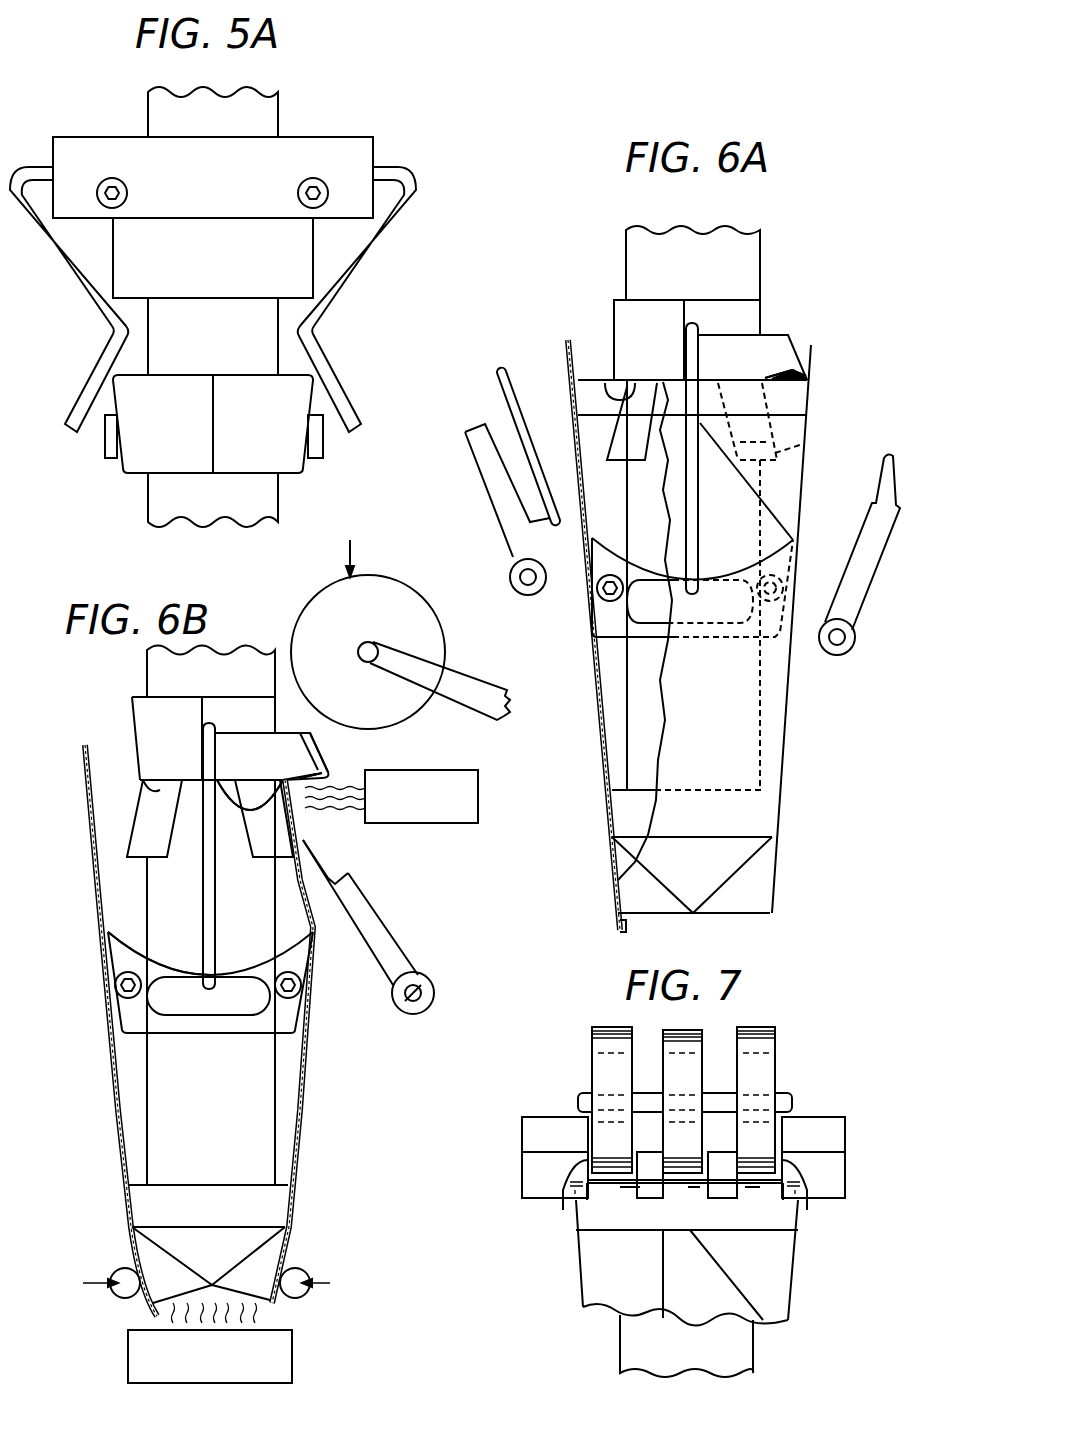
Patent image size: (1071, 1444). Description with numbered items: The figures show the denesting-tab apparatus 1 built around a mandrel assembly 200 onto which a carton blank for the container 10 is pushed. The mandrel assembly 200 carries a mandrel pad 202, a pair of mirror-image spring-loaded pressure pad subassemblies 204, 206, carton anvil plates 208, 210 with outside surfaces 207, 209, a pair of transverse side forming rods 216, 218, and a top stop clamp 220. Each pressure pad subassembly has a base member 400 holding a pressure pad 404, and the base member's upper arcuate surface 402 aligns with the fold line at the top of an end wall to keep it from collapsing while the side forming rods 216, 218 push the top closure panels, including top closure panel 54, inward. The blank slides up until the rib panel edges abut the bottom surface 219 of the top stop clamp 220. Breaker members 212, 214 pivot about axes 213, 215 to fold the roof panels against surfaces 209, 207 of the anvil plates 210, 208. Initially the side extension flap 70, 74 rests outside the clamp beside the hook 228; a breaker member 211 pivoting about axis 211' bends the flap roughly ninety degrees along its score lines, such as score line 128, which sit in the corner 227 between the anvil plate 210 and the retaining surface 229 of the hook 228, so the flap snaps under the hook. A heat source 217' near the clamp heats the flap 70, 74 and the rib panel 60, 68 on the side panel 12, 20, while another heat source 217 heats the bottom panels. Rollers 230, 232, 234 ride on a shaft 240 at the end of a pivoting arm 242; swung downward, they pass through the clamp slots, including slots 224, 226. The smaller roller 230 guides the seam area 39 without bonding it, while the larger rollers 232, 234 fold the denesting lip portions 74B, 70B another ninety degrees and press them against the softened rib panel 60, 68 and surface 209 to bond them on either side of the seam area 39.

In FIG. 6A, the tube holder 1 is at (785, 715).
In FIG. 6A, the container 10 is at (605, 763).
In FIG. 6B, the container 10 is at (335, 1175).
In FIG. 7, the side panel 12 is at (710, 1290).
In FIG. 7, the side panel 20 is at (645, 1290).
In FIG. 7, the seam area 39 is at (688, 1190).
In FIG. 6A, the top closure panel 54 is at (738, 565).
In FIG. 6A, the rib panel 60 is at (808, 399).
In FIG. 6B, the rib panel 60 is at (287, 780).
In FIG. 6A, the rib panel 68 is at (808, 399).
In FIG. 6B, the rib panel 68 is at (287, 780).
In FIG. 6A, the side extension flap 70 is at (807, 370).
In FIG. 6B, the side extension flap 70 is at (307, 778).
In FIG. 6A, the side extension flap 74 is at (807, 370).
In FIG. 6B, the side extension flap 74 is at (307, 778).
In FIG. 7, the denesting lip portion 70B is at (760, 1188).
In FIG. 7, the denesting lip portion 74B is at (615, 1187).
In FIG. 6B, the score line 128 is at (248, 905).
In FIG. 5A, the mandrel assembly 200 is at (260, 81).
In FIG. 6A, the mandrel assembly 200 is at (626, 252).
In FIG. 6B, the mandrel assembly 200 is at (132, 675).
In FIG. 6A, the mandrel pad 202 is at (632, 818).
In FIG. 6B, the mandrel pad 202 is at (155, 1198).
In FIG. 5A, the pressure pad subassembly 204 is at (288, 451).
In FIG. 6A, the pressure pad subassembly 204 is at (613, 623).
In FIG. 6B, the pressure pad subassembly 204 is at (131, 1048).
In FIG. 5A, the pressure pad subassembly 206 is at (195, 448).
In FIG. 6A, the outside surface 207 is at (614, 432).
In FIG. 6B, the outside surface 207 is at (122, 850).
In FIG. 6A, the carton anvil plate 208 is at (647, 449).
In FIG. 6B, the carton anvil plate 208 is at (150, 813).
In FIG. 6A, the outside surface 209 is at (800, 445).
In FIG. 6B, the outside surface 209 is at (303, 843).
In FIG. 6A, the carton anvil plate 210 is at (768, 442).
In FIG. 6B, the carton anvil plate 210 is at (283, 850).
In FIG. 6B, the breaker member 211 is at (373, 886).
In FIG. 6B, the axis 211' is at (428, 974).
In FIG. 6A, the breaker member 212 is at (860, 558).
In FIG. 6A, the axis 213 is at (837, 645).
In FIG. 6A, the breaker member 214 is at (502, 370).
In FIG. 6A, the axis 215 is at (560, 560).
In FIG. 5A, the side forming rod 216 is at (358, 270).
In FIG. 6A, the side forming rod 216 is at (727, 502).
In FIG. 6B, the side forming rod 216 is at (220, 932).
In FIG. 6B, the heat source 217 is at (244, 1343).
In FIG. 6B, the heat source 217' is at (392, 813).
In FIG. 5A, the side forming rod 218 is at (72, 282).
In FIG. 5A, the bottom surface 219 is at (349, 220).
In FIG. 6A, the bottom surface 219 is at (607, 389).
In FIG. 6B, the bottom surface 219 is at (150, 797).
In FIG. 5A, the top stop clamp 220 is at (242, 192).
In FIG. 6A, the top stop clamp 220 is at (753, 350).
In FIG. 6B, the top stop clamp 220 is at (150, 718).
In FIG. 7, the top stop clamp 220 is at (537, 1133).
In FIG. 7, the slot 224 is at (563, 1200).
In FIG. 7, the slot 226 is at (807, 1207).
In FIG. 6B, the corner 227 is at (280, 757).
In FIG. 6A, the hook 228 is at (808, 382).
In FIG. 6B, the hook 228 is at (313, 777).
In FIG. 6B, the retaining surface 229 is at (304, 738).
In FIG. 7, the roller 230 is at (690, 1032).
In FIG. 6B, the roller 232 is at (442, 633).
In FIG. 7, the roller 232 is at (592, 1037).
In FIG. 7, the roller 234 is at (775, 1040).
In FIG. 6B, the shaft 240 is at (383, 623).
In FIG. 7, the shaft 240 is at (788, 1093).
In FIG. 6B, the arm 242 is at (428, 697).
In FIG. 6B, the base member 400 is at (283, 1010).
In FIG. 6B, the arcuate surface 402 is at (163, 960).
In FIG. 6B, the pressure pad 404 is at (177, 997).